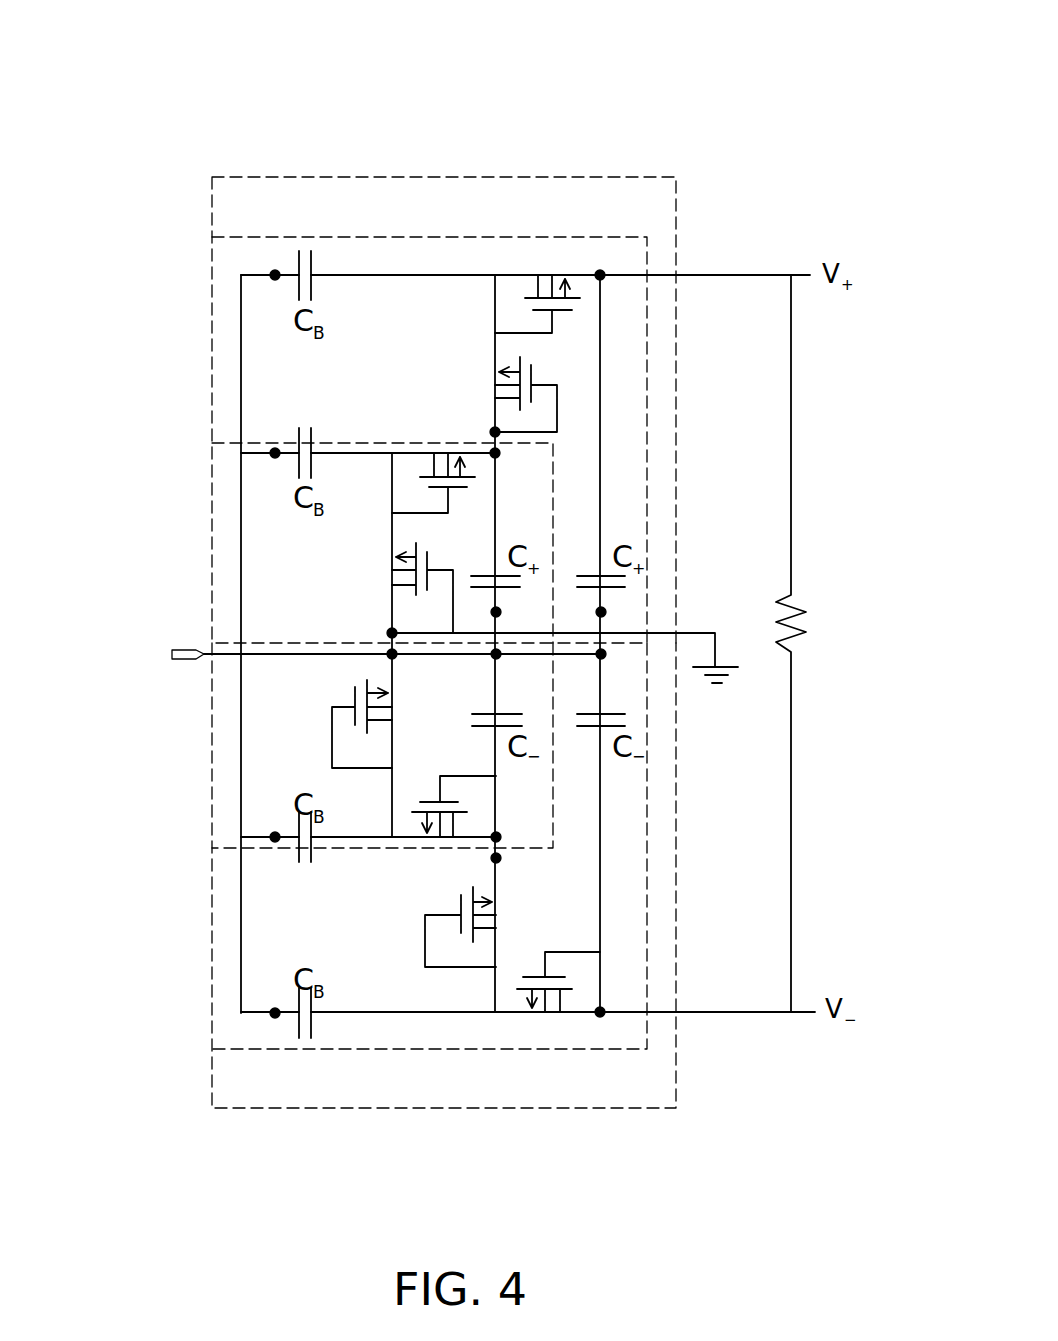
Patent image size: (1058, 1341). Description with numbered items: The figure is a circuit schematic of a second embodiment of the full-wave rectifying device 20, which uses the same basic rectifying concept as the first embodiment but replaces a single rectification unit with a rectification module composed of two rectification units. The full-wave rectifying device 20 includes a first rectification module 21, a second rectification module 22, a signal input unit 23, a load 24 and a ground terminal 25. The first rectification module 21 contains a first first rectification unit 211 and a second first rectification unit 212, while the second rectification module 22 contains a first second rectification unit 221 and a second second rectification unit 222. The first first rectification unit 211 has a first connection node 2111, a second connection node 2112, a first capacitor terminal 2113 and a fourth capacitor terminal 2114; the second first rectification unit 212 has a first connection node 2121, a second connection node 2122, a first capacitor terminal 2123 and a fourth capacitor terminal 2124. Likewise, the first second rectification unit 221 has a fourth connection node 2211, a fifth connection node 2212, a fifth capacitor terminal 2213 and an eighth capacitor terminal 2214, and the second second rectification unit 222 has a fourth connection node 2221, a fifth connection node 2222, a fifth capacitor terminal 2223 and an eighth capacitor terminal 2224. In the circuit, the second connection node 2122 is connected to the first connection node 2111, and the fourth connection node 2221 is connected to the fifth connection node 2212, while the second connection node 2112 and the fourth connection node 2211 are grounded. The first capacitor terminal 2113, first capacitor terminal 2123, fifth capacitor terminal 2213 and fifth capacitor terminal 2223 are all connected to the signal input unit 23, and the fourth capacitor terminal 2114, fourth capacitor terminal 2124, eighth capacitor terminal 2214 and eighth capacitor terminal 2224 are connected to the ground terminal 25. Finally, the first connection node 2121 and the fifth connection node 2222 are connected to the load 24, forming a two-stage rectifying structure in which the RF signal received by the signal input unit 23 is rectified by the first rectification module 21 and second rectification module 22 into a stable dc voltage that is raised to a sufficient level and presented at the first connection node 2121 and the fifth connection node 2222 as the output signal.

The full-wave rectifying device 20 is at (563, 107).
The first rectification module 21 is at (240, 177).
The second rectification module 22 is at (255, 1108).
The signal input unit 23 is at (115, 655).
The load 24 is at (835, 627).
The ground terminal 25 is at (725, 670).
The first first rectification unit 211 is at (212, 545).
The second first rectification unit 212 is at (212, 262).
The first second rectification unit 221 is at (212, 763).
The second second rectification unit 222 is at (210, 1017).
The first connection node 2111 is at (495, 453).
The second connection node 2112 is at (392, 633).
The first capacitor terminal 2113 is at (275, 453).
The fourth capacitor terminal 2114 is at (496, 612).
The first connection node 2121 is at (600, 275).
The second connection node 2122 is at (495, 432).
The first capacitor terminal 2123 is at (275, 275).
The fourth capacitor terminal 2124 is at (601, 612).
The fourth connection node 2211 is at (392, 654).
The fifth connection node 2212 is at (496, 837).
The fifth capacitor terminal 2213 is at (275, 837).
The eighth capacitor terminal 2214 is at (496, 654).
The fourth connection node 2221 is at (496, 858).
The fifth connection node 2222 is at (601, 1012).
The fifth capacitor terminal 2223 is at (275, 1013).
The eighth capacitor terminal 2224 is at (601, 654).